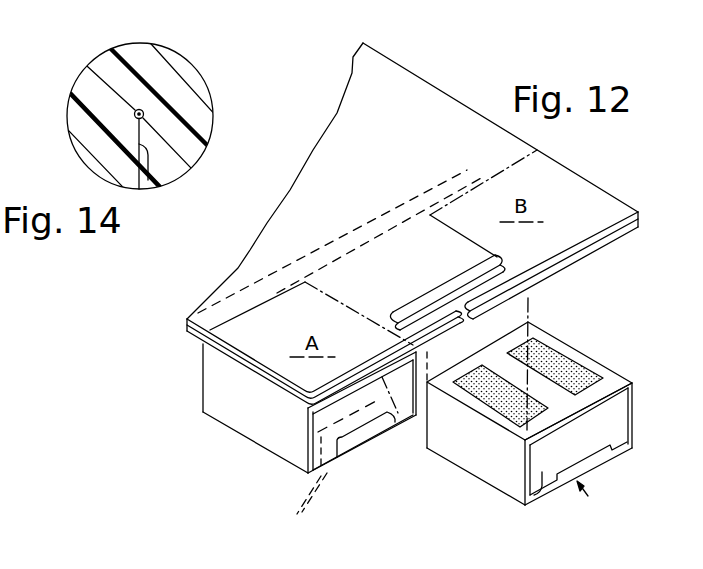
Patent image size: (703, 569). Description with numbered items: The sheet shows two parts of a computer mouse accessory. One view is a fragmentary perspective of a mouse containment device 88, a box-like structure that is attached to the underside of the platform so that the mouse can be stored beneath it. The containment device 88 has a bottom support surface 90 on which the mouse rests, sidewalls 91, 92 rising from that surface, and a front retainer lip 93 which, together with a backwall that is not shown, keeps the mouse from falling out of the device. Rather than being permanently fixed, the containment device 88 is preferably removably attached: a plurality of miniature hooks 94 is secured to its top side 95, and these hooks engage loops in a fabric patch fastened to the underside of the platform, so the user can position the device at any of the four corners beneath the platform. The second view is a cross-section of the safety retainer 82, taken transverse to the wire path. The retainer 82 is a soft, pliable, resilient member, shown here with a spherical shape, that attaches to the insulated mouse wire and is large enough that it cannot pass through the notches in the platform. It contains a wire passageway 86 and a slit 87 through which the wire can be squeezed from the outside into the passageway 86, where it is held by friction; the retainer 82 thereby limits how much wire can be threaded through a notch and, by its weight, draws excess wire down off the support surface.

In FIG. 14, the safety retainer 82 is at (182, 73).
In FIG. 14, the wire passageway 86 is at (143, 116).
In FIG. 14, the slit 87 is at (152, 191).
In FIG. 12, the mouse containment device 88 is at (589, 501).
In FIG. 12, the support surface 90 is at (542, 474).
In FIG. 12, the sidewall 91 is at (485, 465).
In FIG. 12, the sidewall 92 is at (613, 412).
In FIG. 12, the front retainer lip 93 is at (599, 460).
In FIG. 12, the miniature hooks 94 is at (558, 362).
In FIG. 12, the top side 95 is at (598, 411).